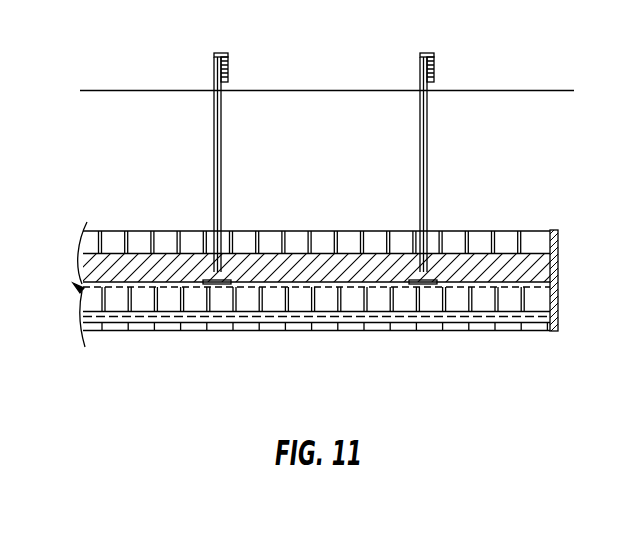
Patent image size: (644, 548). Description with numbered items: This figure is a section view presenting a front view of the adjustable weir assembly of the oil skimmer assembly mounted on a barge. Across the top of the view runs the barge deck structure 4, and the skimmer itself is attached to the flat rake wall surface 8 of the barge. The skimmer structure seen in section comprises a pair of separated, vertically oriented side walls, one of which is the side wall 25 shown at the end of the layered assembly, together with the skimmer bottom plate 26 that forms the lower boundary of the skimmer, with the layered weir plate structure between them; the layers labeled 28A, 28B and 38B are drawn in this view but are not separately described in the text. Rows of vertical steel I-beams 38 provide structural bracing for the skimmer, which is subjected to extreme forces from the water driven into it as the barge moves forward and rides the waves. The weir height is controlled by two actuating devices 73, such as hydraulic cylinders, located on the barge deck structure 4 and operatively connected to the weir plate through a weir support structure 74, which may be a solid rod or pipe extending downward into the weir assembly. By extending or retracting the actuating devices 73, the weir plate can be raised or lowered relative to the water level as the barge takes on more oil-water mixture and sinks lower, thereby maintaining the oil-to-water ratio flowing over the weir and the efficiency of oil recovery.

The deck structure 4 is at (124, 91).
The rake wall surface 8 is at (493, 240).
The side wall 25 is at (558, 307).
The skimmer bottom plate 26 is at (432, 331).
The second block layer 28A is at (452, 277).
The lower sheet layer 28B is at (533, 317).
The vertical steel I-beam 38 is at (262, 243).
The lower skin layer 38B is at (137, 318).
The actuating device 73 is at (229, 70).
The weir support structure 74 is at (213, 175).